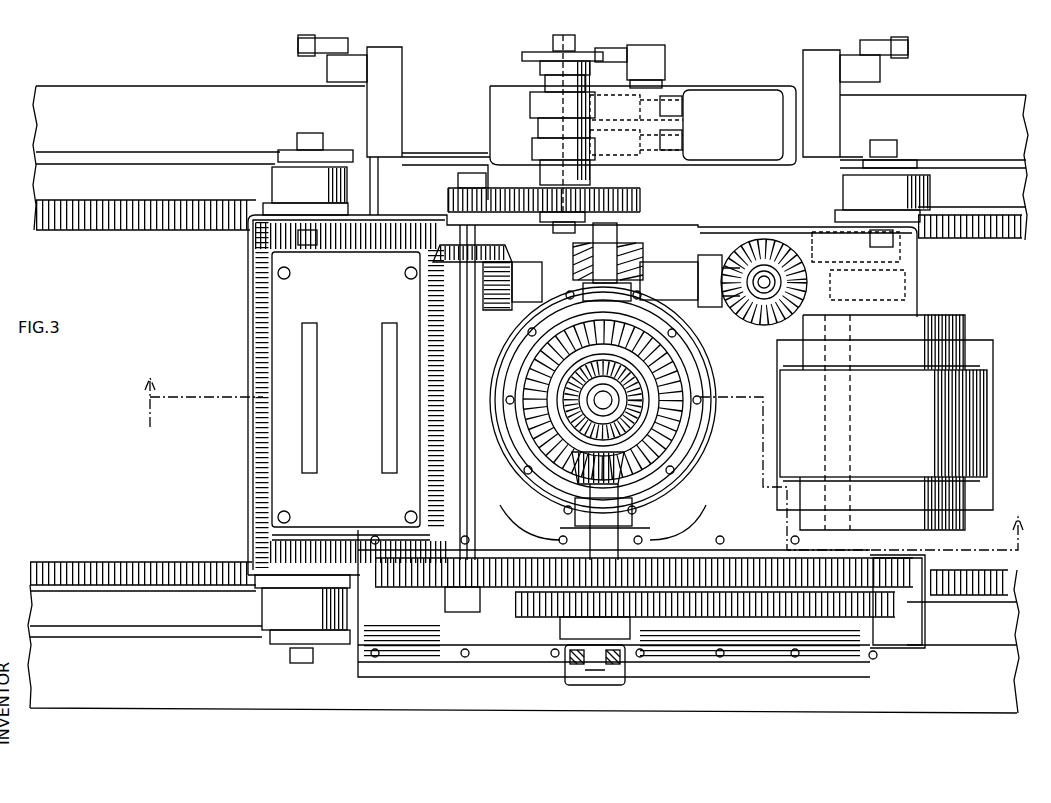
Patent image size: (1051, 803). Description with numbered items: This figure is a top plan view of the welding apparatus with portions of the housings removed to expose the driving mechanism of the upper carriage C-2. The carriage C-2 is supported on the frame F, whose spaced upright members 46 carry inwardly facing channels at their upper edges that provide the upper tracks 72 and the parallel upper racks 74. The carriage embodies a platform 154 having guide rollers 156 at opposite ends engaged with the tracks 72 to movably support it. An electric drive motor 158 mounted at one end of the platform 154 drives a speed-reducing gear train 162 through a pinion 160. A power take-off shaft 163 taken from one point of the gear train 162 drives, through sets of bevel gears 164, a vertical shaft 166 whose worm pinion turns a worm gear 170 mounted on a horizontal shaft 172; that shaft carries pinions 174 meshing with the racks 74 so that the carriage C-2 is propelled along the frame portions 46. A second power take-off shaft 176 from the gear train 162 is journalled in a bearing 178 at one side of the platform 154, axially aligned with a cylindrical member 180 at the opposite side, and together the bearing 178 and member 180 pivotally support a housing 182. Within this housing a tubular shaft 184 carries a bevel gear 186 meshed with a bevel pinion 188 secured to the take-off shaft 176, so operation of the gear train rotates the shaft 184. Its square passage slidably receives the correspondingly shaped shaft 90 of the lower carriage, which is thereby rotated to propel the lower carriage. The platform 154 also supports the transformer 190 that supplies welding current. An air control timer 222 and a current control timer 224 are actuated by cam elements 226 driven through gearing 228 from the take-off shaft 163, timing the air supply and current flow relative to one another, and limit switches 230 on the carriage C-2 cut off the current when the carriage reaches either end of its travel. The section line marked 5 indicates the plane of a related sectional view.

The upright members 46 is at (219, 86).
The upper tracks 72 is at (36, 187).
The upper racks 74 is at (136, 232).
The guide rollers 156 is at (272, 185).
The platform 154 is at (248, 349).
The transformer 190 is at (314, 528).
The power take-off shaft 163 is at (461, 375).
The bevel gears 164 is at (458, 266).
The vertical shaft 166 is at (772, 250).
The worm gear 170 is at (905, 283).
The horizontal shaft 172 is at (824, 436).
The pinions 174 is at (813, 230).
The electric drive motor 158 is at (877, 435).
The pinion 160 is at (641, 603).
The speed-reducing gear train 162 is at (672, 625).
The power take-off shaft 176 is at (690, 472).
The bearing 178 is at (660, 495).
The cylindrical member 180 is at (642, 263).
The housing 182 is at (537, 500).
The tubular shaft 184 is at (627, 403).
The bevel gear 186 is at (685, 357).
The bevel pinion 188 is at (570, 470).
The shaft 90 is at (540, 357).
The air control timer 222 is at (740, 136).
The current control timer 224 is at (665, 42).
The cam elements 226 is at (548, 112).
The gearing 228 is at (499, 188).
The limit switches 230 is at (348, 30).
The section line 5- 5 is at (575, 464).
The upper carriage C-2 is at (238, 467).
The frame F is at (159, 86).